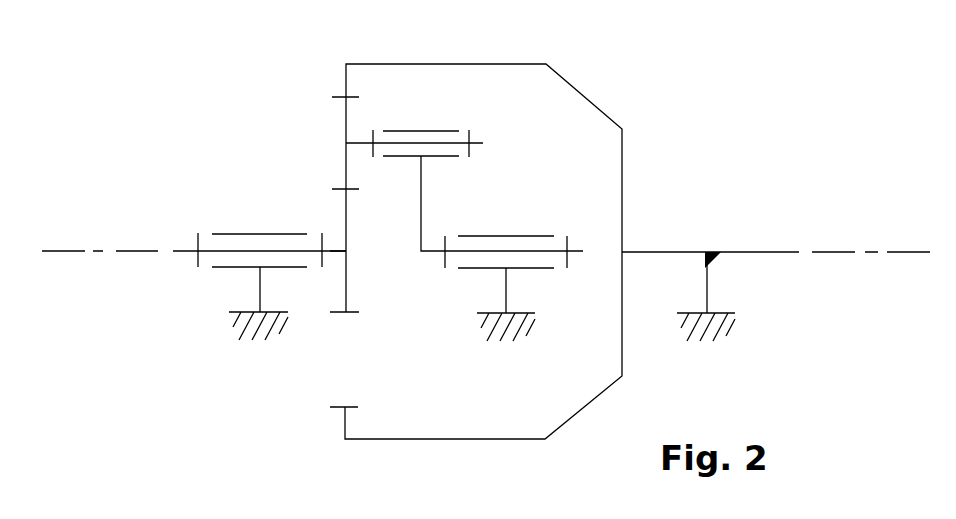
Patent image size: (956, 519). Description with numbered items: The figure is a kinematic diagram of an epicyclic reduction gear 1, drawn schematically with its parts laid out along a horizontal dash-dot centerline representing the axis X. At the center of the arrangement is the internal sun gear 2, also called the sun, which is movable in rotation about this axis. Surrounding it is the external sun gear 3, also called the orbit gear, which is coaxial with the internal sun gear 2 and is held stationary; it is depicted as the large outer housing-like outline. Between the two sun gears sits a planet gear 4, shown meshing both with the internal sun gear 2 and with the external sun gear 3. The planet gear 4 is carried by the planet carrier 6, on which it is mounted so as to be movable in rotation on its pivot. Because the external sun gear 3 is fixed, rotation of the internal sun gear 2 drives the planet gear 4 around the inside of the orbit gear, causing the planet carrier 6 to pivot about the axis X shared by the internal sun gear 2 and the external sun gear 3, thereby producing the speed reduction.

The epicyclic reduction gear 1 is at (707, 135).
The internal sun gear 2 is at (346, 282).
The external sun gear 3 is at (477, 64).
The planet gear 4 is at (345, 117).
The planet carrier 6 is at (421, 183).
The axis X is at (905, 253).